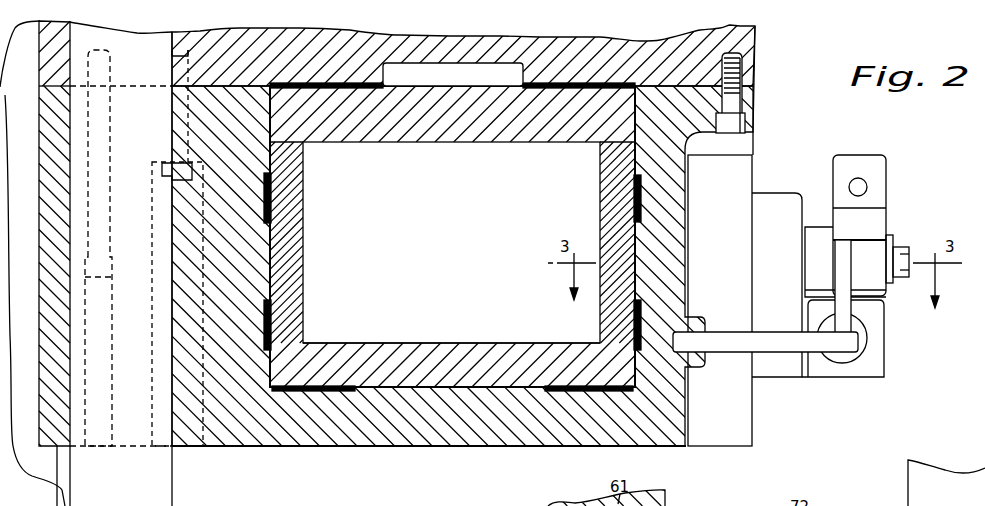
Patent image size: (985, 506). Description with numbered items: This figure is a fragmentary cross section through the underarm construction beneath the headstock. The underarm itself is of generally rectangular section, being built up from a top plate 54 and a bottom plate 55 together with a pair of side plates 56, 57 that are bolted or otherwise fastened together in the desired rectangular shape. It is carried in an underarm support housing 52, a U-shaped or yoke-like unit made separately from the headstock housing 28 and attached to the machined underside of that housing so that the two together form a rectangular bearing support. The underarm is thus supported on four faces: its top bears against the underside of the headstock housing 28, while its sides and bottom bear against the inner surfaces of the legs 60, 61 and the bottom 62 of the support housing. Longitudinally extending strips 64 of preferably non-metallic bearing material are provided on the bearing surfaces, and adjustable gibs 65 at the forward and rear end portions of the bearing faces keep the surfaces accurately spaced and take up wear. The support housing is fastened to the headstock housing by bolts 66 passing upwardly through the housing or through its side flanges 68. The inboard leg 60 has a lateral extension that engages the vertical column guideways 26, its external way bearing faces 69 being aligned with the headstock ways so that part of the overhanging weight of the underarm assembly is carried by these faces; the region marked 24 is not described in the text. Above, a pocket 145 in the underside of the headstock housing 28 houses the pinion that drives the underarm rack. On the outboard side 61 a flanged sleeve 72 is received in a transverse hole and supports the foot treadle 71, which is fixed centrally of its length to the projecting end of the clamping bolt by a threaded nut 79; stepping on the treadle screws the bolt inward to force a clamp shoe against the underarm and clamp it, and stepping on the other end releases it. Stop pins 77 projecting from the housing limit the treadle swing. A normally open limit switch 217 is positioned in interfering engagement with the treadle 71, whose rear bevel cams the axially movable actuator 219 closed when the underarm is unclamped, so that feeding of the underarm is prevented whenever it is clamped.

The direction arrow 24 is at (183, 477).
The vertical column guideways 26 is at (124, 263).
The headstock housing 28 is at (757, 66).
The underarm support housing 52 is at (372, 447).
The top plate 54 is at (443, 140).
The bottom plate 55 is at (465, 350).
The side plate 56 is at (301, 257).
The side plate 57 is at (606, 222).
The leg 60 is at (192, 262).
The leg 61 is at (670, 180).
The bottom 62 is at (460, 440).
The bearing strips 64 is at (366, 84).
The adjustable gibs 65 is at (268, 198).
The bolts 66 is at (731, 132).
The side flanges 68 is at (752, 114).
The way bearing faces 69 is at (173, 447).
The foot treadle 71 is at (876, 219).
The flanged sleeve 72 is at (790, 196).
The stop pins 77 is at (820, 350).
The threaded nut 79 is at (903, 247).
The pocket 145 is at (448, 64).
The limit switch 217 is at (876, 351).
The actuator 219 is at (846, 358).